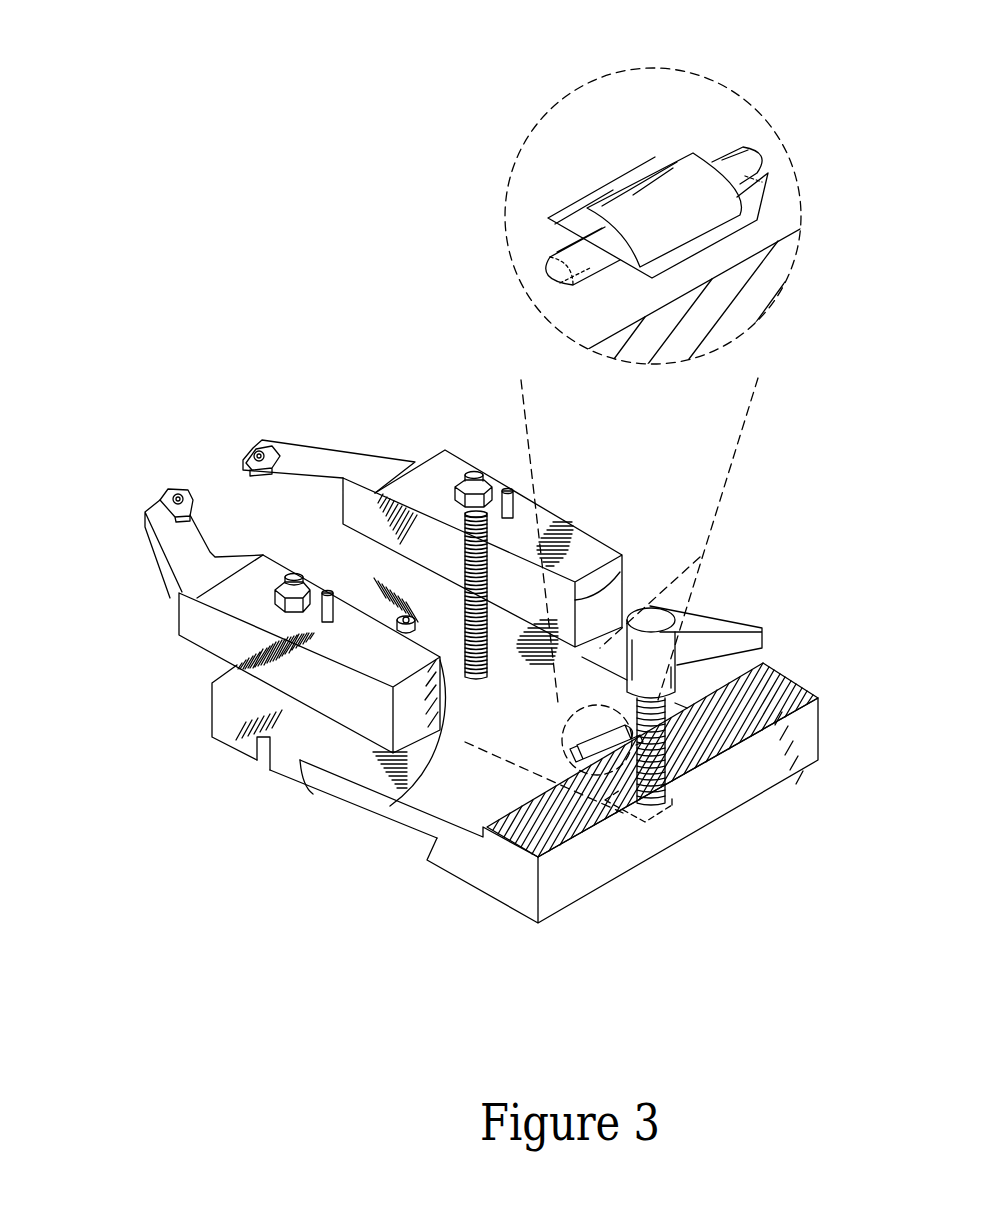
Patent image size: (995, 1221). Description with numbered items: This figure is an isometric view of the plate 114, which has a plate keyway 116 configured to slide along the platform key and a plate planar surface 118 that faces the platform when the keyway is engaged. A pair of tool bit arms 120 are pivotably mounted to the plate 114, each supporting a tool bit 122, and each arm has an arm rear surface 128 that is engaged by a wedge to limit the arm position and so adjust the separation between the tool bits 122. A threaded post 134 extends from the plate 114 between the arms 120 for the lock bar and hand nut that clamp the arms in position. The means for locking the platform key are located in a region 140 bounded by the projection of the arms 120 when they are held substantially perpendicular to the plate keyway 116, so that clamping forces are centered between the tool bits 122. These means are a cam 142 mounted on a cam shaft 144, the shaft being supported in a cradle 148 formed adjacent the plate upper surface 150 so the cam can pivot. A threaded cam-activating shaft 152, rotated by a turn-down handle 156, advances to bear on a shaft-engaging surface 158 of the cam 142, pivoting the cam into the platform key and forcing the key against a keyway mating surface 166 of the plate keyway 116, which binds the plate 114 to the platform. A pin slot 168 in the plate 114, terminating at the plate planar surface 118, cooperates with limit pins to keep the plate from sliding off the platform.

The plate 114 is at (622, 147).
The plate keyway 116 is at (403, 830).
The plate planar surface 118 is at (500, 905).
The tool bit arms 120 is at (282, 549).
The tool bit 122 is at (245, 458).
The arm rear surface 128 is at (600, 648).
The threaded post 134 is at (490, 540).
The region 140 is at (510, 738).
The cam 142 is at (677, 138).
The cam shaft 144 is at (741, 167).
The cradle 148 is at (545, 271).
The plate upper surface 150 is at (622, 602).
The cam-activating shaft 152 is at (742, 800).
The turn-down handle 156 is at (730, 627).
The shaft-engaging surface 158 is at (665, 807).
The keyway mating surface 166 is at (315, 797).
The pin slot 168 is at (267, 752).